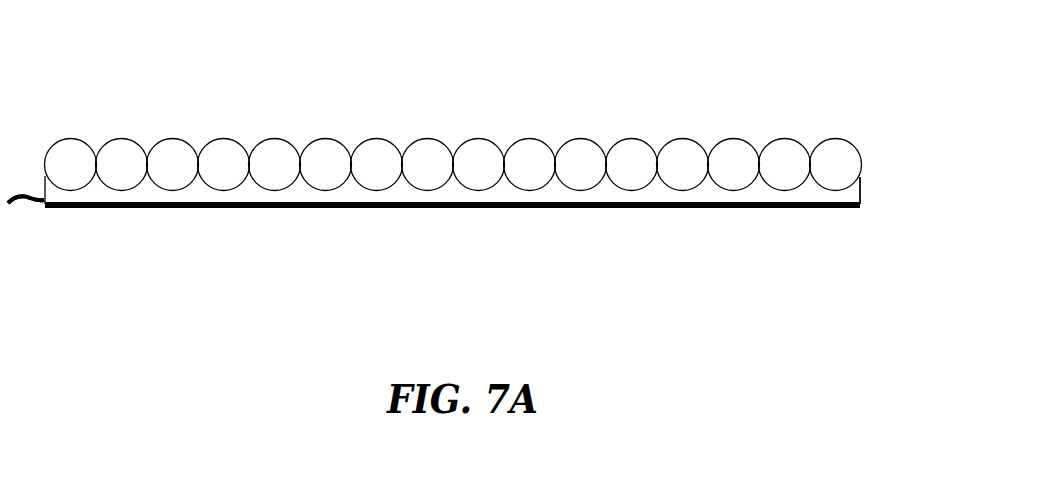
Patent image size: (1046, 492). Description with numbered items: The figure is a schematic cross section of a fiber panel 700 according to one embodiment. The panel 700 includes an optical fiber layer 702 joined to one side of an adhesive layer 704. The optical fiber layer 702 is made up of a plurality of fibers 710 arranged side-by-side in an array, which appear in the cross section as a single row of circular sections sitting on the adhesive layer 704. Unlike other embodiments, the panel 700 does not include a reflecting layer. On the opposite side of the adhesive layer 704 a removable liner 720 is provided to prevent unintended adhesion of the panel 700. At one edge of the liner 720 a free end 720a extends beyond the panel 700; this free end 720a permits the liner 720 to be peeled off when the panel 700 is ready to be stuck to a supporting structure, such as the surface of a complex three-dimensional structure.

The panel 700 is at (146, 47).
The optical fiber layer 702 is at (858, 128).
The adhesive layer 704 is at (862, 183).
The fibers 710 is at (172, 145).
The removable liner 720 is at (470, 210).
The free end 720a is at (36, 215).